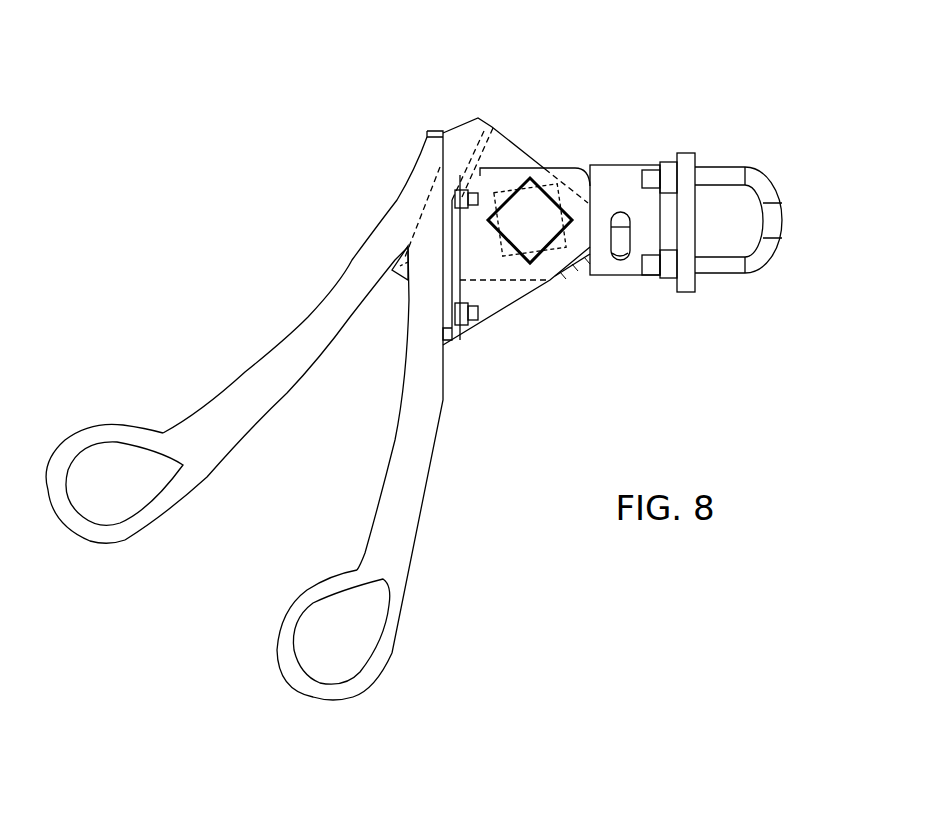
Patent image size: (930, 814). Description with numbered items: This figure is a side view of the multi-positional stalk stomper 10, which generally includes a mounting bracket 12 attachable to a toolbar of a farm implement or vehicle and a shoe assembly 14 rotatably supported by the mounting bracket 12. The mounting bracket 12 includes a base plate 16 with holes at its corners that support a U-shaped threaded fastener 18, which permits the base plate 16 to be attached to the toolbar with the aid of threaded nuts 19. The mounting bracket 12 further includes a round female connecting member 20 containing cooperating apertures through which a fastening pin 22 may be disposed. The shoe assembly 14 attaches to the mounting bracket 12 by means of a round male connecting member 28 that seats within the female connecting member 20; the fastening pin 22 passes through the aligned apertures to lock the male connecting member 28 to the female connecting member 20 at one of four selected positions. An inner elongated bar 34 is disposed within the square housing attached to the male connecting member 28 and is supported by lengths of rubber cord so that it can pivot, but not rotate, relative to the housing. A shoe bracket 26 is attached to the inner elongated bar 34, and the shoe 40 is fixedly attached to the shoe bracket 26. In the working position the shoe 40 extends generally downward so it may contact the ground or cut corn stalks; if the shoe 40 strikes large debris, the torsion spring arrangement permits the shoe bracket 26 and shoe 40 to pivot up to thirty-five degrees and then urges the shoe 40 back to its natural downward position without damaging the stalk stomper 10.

The multi-positional stalk stomper 10 is at (182, 0).
The mounting bracket 12 is at (707, 145).
The shoe assembly 14 is at (535, 133).
The base plate 16 is at (685, 155).
The U-shaped threaded fastener 18 is at (733, 275).
The threaded nut 19 is at (665, 277).
The female connecting member 20 is at (618, 167).
The fastening pin 22 is at (619, 260).
The shoe bracket 26 is at (502, 310).
The male connecting member 28 is at (587, 167).
The inner elongated bar 34 is at (533, 227).
The shoe 40 is at (245, 372).